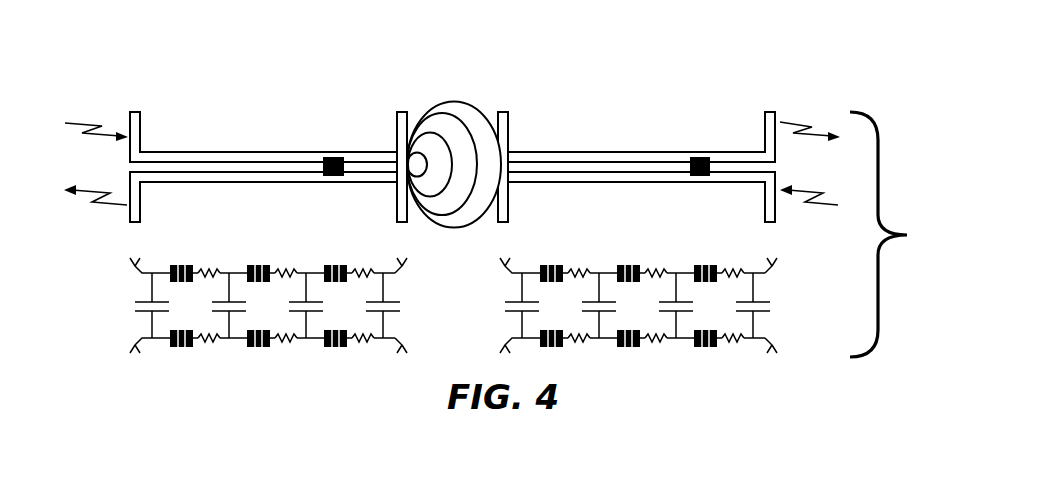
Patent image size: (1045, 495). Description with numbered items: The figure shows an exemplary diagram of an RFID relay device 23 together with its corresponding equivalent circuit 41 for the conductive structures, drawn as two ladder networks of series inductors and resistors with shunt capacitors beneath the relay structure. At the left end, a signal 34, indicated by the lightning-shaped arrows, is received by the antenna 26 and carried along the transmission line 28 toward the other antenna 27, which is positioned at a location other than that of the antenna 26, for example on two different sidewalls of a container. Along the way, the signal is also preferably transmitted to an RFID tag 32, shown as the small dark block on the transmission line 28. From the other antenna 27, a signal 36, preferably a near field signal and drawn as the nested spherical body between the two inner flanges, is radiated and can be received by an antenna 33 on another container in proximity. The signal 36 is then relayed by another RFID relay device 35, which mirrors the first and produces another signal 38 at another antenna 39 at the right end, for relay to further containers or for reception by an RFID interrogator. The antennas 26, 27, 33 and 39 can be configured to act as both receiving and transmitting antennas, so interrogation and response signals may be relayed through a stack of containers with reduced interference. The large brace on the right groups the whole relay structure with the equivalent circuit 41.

The RFID relay device 23 is at (458, 127).
The antenna 26 is at (131, 126).
The other antenna 27 is at (397, 125).
The transmission line 28 is at (210, 157).
The RFID tag 32 is at (328, 157).
The antenna 33 is at (508, 125).
The signal 34 is at (81, 117).
The another RFID relay device 35 is at (670, 132).
The signal 36 is at (440, 100).
The another signal 38 is at (822, 118).
The another antenna 39 is at (777, 116).
The equivalent circuit 41 is at (907, 235).